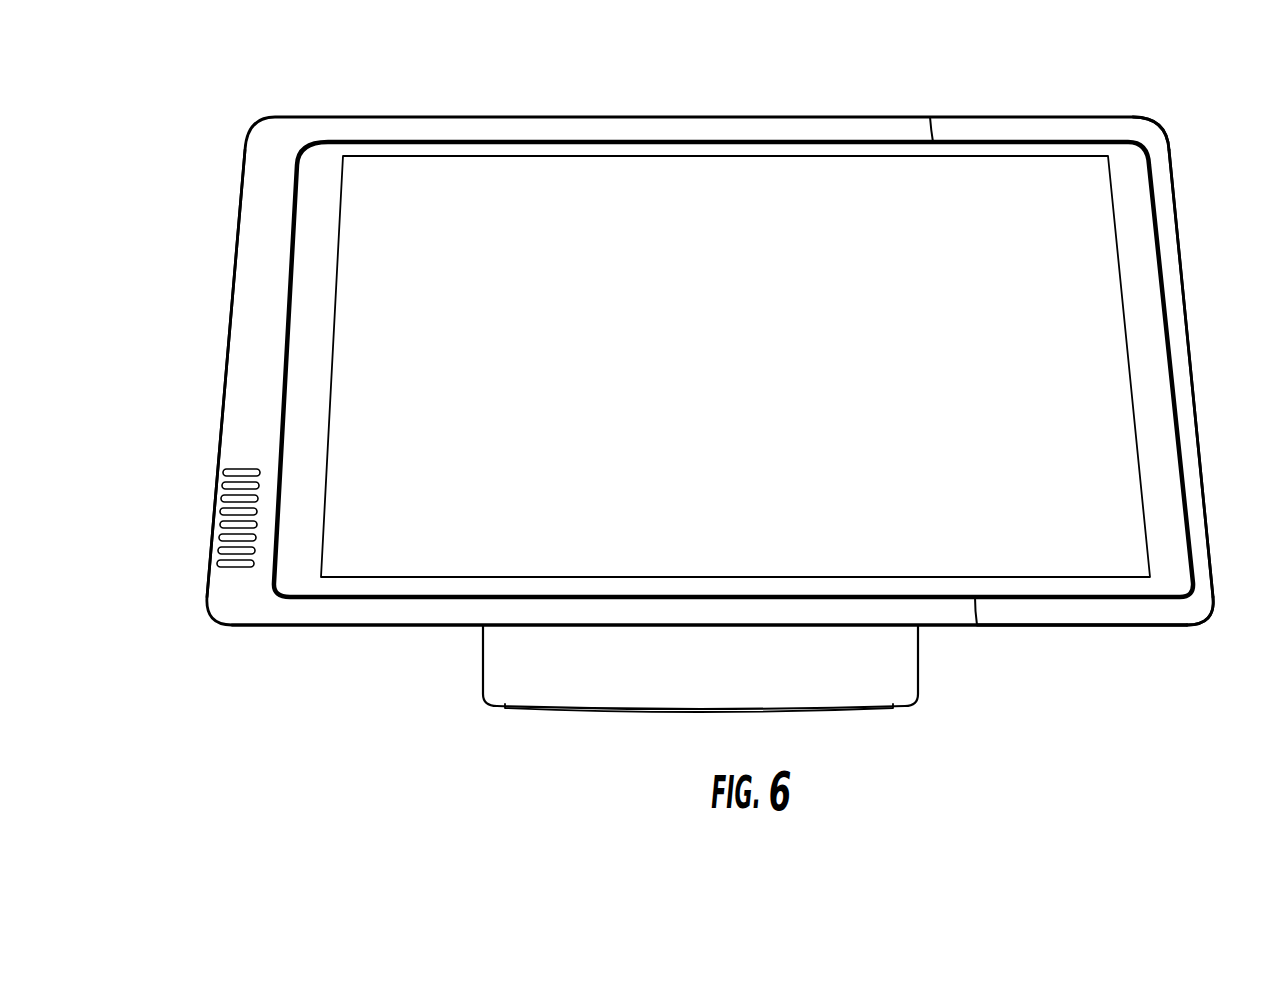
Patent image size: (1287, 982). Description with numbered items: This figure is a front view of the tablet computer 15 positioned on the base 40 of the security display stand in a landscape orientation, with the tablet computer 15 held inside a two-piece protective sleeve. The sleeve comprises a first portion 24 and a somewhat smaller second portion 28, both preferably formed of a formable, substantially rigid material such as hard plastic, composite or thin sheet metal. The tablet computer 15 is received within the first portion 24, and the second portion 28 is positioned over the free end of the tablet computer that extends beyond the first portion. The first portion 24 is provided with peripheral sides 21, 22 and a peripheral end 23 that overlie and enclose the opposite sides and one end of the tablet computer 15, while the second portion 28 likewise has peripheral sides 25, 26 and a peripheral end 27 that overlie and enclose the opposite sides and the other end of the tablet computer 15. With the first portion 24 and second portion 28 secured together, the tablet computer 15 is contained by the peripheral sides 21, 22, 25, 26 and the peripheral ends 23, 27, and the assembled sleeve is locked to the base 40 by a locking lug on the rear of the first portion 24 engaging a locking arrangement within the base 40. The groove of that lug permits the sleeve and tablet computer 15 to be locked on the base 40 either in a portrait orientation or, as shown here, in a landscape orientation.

The tablet computer 15 is at (937, 192).
The peripheral side 21 is at (406, 133).
The peripheral side 22 is at (345, 625).
The peripheral end 23 is at (232, 290).
The first portion 24 is at (601, 130).
The peripheral side 25 is at (1122, 132).
The peripheral side 26 is at (1140, 628).
The peripheral end 27 is at (1180, 360).
The second portion 28 is at (1061, 620).
The base 40 is at (624, 698).